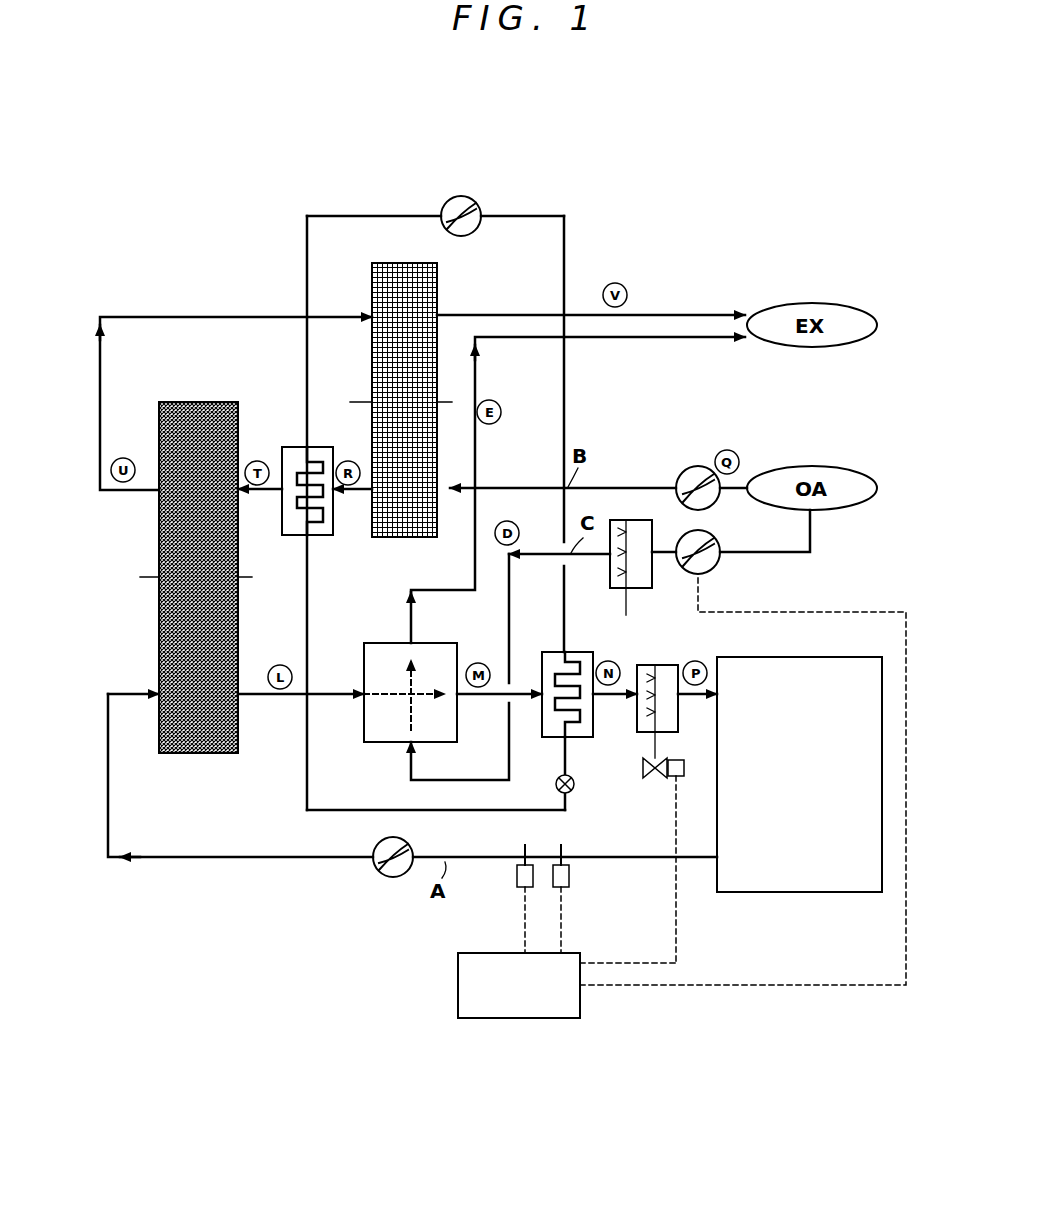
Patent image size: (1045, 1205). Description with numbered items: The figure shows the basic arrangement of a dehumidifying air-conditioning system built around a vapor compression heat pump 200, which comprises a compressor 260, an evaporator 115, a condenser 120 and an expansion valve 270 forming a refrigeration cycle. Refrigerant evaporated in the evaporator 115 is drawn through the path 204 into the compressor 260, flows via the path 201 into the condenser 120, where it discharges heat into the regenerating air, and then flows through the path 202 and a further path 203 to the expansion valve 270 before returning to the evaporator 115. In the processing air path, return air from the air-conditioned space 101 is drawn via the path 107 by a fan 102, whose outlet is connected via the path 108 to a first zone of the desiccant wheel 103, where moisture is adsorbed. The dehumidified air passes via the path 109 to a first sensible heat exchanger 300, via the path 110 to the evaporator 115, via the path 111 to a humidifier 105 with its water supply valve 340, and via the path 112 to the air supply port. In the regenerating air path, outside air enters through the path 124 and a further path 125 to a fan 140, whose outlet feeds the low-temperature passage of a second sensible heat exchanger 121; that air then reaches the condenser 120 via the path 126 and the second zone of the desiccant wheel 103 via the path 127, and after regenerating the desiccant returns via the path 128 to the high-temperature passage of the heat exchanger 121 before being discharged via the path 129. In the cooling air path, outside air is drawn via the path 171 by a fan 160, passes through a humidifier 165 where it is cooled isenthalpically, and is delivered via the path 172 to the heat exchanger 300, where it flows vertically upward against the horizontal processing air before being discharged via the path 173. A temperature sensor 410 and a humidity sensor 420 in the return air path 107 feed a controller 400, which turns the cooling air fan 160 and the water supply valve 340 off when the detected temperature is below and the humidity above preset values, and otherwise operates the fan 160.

The heat pump 200 is at (511, 205).
The path 201 is at (305, 240).
The path 202 is at (306, 637).
The path 204 is at (565, 402).
The compressor 260 is at (444, 229).
The second sensible heat exchanger 121 is at (437, 294).
The path 128 is at (180, 317).
The path 129 is at (664, 310).
The path 173 is at (476, 376).
The high temperature heat source heat exchanger (condenser) 120 is at (285, 447).
The path 127 is at (258, 492).
The path 126 is at (350, 492).
The outdoor air intake duct 125 is at (633, 488).
The fan 140 is at (681, 472).
The path 124 is at (740, 486).
The humidifier 165 is at (626, 520).
The fan 160 is at (720, 540).
The path 171 is at (760, 556).
The path 172 is at (588, 556).
The desiccant wheel 103 is at (158, 648).
The first sensible heat exchanger 300 is at (437, 643).
The low temperature heat source heat exchanger (evaporator) 115 is at (576, 652).
The humidifier 105 is at (642, 665).
The air-conditioned space 101 is at (810, 657).
The path 109 is at (265, 700).
The path 110 is at (480, 700).
The path 111 is at (606, 698).
The path 112 is at (697, 704).
The duct 203 is at (568, 752).
The expansion valve 270 is at (575, 785).
The water supply valve 340 is at (674, 780).
The path 108 is at (275, 862).
The fan 102 is at (393, 880).
The temperature sensor 410 is at (516, 882).
The humidity sensor 420 is at (570, 882).
The path 107 is at (650, 862).
The controller 400 is at (470, 953).